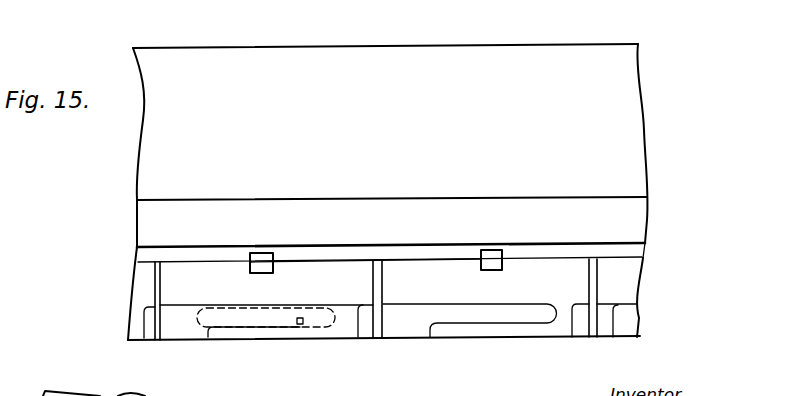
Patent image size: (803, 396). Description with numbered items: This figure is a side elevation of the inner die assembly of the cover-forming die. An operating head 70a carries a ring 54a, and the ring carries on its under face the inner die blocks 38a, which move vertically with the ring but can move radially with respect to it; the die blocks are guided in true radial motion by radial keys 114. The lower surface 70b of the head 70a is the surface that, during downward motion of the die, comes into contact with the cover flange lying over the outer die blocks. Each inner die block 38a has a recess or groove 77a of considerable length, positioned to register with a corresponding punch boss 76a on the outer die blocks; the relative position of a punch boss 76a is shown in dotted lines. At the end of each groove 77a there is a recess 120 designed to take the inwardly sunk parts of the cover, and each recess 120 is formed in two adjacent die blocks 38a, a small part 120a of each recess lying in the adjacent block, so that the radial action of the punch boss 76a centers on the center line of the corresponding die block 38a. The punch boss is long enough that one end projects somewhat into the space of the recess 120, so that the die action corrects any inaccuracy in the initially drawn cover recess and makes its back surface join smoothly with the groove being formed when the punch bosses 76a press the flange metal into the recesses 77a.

The operating head 70a is at (622, 117).
The lower surface of head 70b is at (602, 245).
The ring 54a is at (333, 252).
The radial key 114 is at (255, 253).
The inner die block 38a is at (137, 282).
The recess 120 is at (185, 327).
The small part of recess 120a is at (146, 339).
The recess or groove 77a is at (257, 330).
The punch boss 76a is at (303, 327).